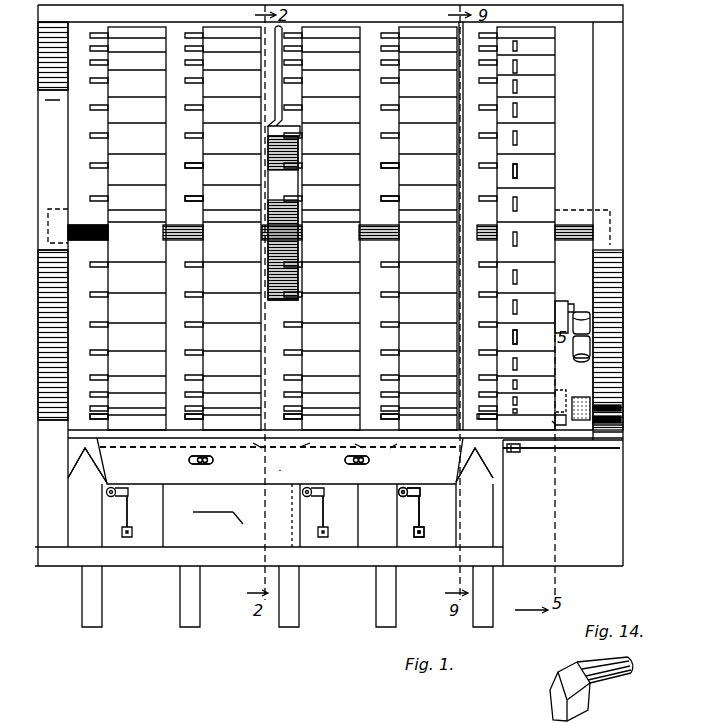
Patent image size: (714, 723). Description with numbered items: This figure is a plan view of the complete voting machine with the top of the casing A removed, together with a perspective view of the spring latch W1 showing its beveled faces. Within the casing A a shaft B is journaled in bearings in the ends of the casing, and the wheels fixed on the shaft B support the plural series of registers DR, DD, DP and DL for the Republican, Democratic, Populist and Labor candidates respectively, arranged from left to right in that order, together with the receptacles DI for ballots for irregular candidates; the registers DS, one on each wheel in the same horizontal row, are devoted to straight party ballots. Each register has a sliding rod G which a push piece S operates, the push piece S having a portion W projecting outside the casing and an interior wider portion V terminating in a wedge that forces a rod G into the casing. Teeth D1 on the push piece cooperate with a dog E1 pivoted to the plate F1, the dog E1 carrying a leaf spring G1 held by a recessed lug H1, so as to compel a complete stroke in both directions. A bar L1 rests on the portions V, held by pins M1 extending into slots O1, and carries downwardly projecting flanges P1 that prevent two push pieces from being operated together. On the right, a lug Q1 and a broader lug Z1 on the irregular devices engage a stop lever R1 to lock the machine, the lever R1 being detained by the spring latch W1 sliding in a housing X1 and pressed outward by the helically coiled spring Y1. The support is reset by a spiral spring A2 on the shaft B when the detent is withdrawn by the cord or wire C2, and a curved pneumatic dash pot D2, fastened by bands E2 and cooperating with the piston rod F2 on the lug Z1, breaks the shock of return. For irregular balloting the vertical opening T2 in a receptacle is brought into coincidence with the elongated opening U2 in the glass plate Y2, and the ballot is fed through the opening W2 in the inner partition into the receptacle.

In FIG. 1, the casing A is at (42, 310).
In FIG. 1, the shaft B is at (67, 231).
In FIG. 1, the Republican register DR is at (117, 228).
In FIG. 1, the Democratic register DD is at (212, 228).
In FIG. 1, the Populist register DP is at (311, 228).
In FIG. 1, the Labor register DL is at (408, 228).
In FIG. 1, the irregular ballot receptacle DI is at (516, 228).
In FIG. 1, the cord or wire C2 is at (460, 297).
In FIG. 1, the vertical opening T2 is at (518, 171).
In FIG. 1, the spiral spring A2 is at (296, 178).
In FIG. 1, the sliding rod G is at (200, 195).
In FIG. 1, the straight party register DS is at (119, 422).
In FIG. 1, the lug Z1 is at (560, 300).
In FIG. 1, the piston rod F2 is at (575, 320).
In FIG. 1, the pneumatic dash pot D2 is at (591, 328).
In FIG. 1, the bands E2 is at (591, 350).
In FIG. 1, the lug Q1 is at (561, 395).
In FIG. 1, the opening W2 is at (585, 401).
In FIG. 1, the housing X1 is at (591, 405).
In FIG. 1, the helically coiled spring Y1 is at (606, 410).
In FIG. 1, the stop lever R1 is at (554, 424).
In FIG. 1, the vertical elongated opening U2 is at (514, 449).
In FIG. 1, the glass plate Y2 is at (547, 443).
In FIG. 1, the wedge portion V is at (280, 485).
In FIG. 1, the downwardly projecting flanges P1 is at (280, 449).
In FIG. 1, the bar L1 is at (289, 464).
In FIG. 1, the slots O1 is at (193, 460).
In FIG. 1, the pins M1 is at (203, 464).
In FIG. 1, the dog E1 is at (129, 493).
In FIG. 1, the plate F1 is at (273, 512).
In FIG. 1, the leaf spring G1 is at (422, 522).
In FIG. 1, the teeth D1 is at (293, 523).
In FIG. 1, the push piece S is at (270, 507).
In FIG. 1, the recessed lug H1 is at (244, 527).
In FIG. 1, the projecting portion W is at (387, 590).
In FIG. 14, the spring latch W1 is at (568, 684).